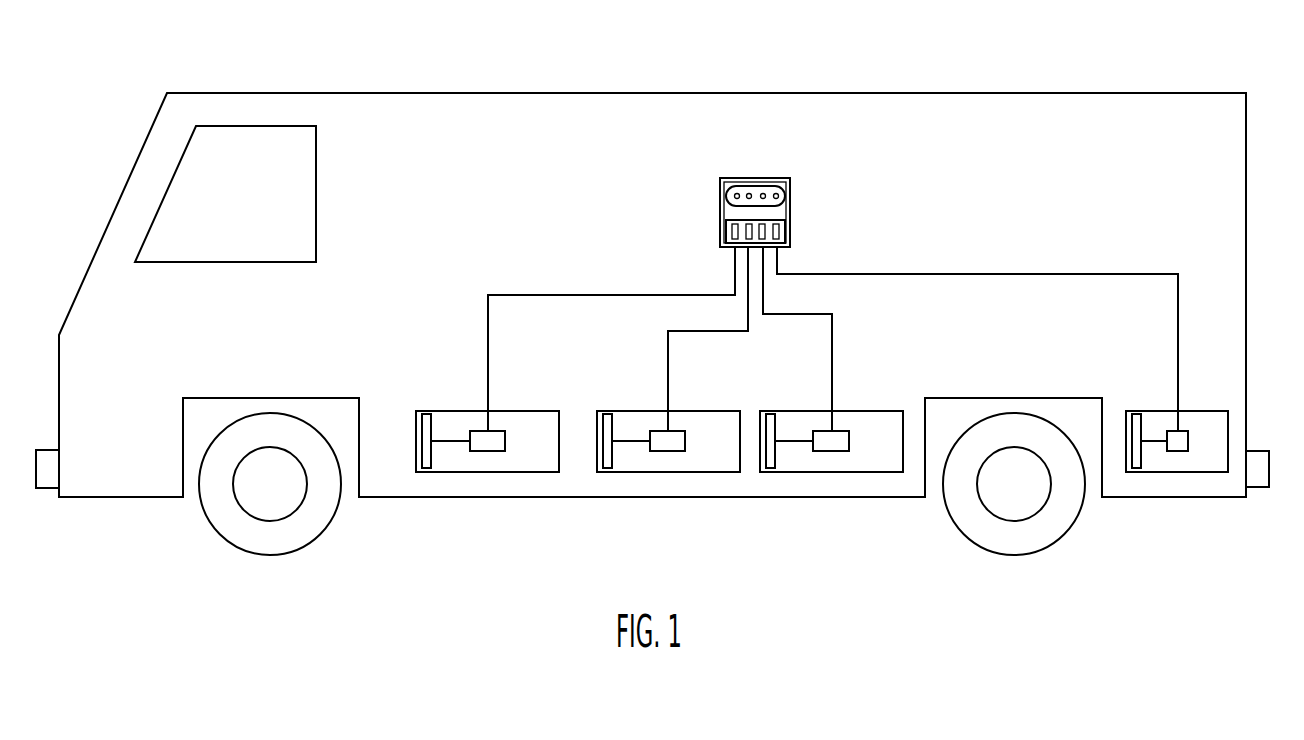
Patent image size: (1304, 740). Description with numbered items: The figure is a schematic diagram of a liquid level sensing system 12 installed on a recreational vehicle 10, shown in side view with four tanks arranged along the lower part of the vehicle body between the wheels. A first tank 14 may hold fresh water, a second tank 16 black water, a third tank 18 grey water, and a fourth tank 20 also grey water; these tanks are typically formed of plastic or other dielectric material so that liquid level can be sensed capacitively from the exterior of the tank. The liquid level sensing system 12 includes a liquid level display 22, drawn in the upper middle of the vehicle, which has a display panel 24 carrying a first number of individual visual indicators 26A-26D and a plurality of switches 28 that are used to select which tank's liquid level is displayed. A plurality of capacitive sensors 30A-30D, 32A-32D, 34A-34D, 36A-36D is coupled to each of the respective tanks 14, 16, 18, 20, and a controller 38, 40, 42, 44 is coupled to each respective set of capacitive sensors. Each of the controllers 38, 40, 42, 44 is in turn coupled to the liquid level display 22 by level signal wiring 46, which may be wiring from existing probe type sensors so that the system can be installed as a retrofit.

The recreational vehicle 10 is at (1076, 93).
The liquid level sensing system 12 is at (1010, 244).
The first tank 14 is at (439, 443).
The second tank 16 is at (621, 442).
The third tank 18 is at (812, 448).
The fourth tank 20 is at (1157, 447).
The liquid level display 22 is at (756, 186).
The display panel 24 is at (737, 165).
The individual visual indicators 26A-26D is at (740, 186).
The switches 28 is at (732, 232).
The capacitive sensors 30A-30D is at (427, 411).
The capacitive sensors 32A-32D is at (608, 411).
The capacitive sensors 34A-34D is at (768, 411).
The capacitive sensors 36A-36D is at (1137, 411).
The controller 38 is at (505, 441).
The controller 40 is at (685, 441).
The controller 42 is at (849, 441).
The controller 44 is at (1188, 441).
The level signal wiring 46 is at (735, 270).